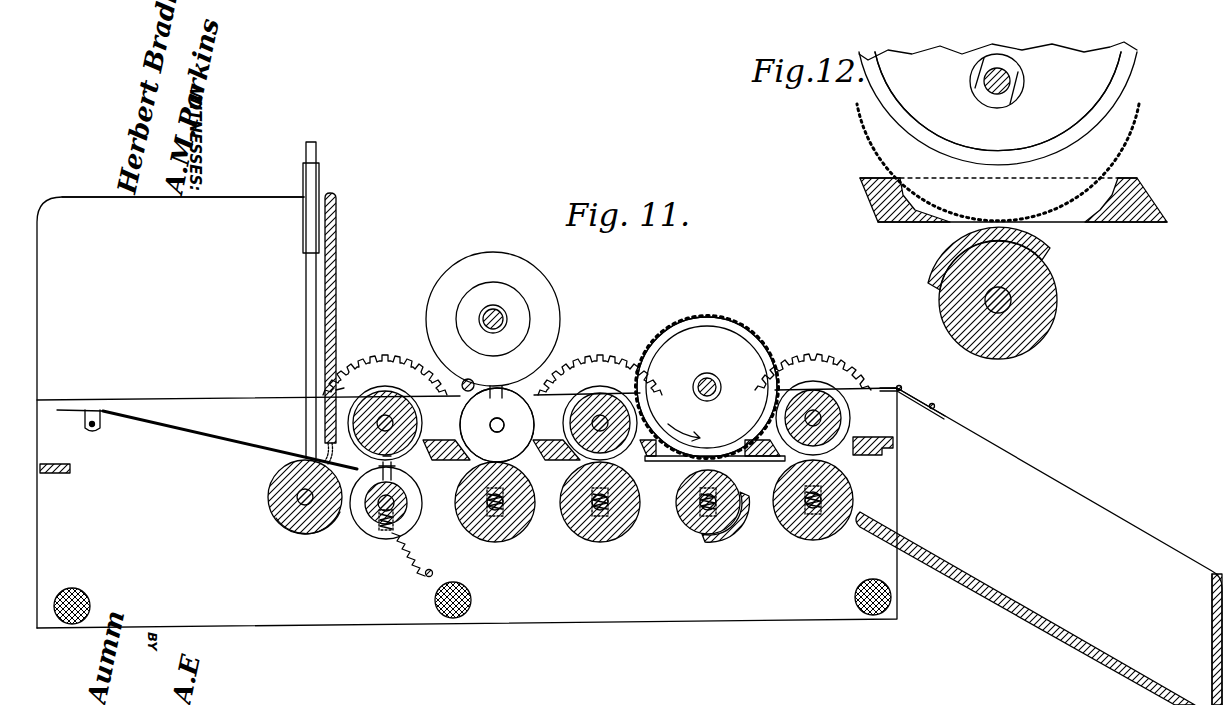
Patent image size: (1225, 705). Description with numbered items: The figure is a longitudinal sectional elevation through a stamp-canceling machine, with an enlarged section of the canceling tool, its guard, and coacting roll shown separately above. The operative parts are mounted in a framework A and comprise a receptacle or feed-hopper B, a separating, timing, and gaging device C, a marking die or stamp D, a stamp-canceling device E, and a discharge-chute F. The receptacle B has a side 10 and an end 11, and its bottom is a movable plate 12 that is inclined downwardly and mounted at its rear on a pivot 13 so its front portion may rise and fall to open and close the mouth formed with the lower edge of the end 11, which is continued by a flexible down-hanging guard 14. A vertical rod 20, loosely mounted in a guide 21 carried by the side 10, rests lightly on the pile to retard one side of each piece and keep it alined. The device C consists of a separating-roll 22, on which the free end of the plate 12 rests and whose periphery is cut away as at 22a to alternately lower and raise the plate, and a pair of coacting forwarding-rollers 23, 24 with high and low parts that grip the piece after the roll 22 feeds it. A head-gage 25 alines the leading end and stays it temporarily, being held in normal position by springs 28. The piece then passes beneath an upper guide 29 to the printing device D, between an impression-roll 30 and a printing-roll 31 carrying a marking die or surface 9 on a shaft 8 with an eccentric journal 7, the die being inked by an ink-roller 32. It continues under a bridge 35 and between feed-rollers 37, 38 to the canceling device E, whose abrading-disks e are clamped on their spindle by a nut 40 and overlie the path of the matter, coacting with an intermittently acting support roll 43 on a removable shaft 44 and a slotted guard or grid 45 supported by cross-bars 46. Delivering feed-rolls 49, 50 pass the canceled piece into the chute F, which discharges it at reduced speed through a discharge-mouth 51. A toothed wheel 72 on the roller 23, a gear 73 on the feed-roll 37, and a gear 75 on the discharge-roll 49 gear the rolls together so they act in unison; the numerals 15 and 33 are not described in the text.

In FIG. 11, the journal 7 is at (493, 418).
In FIG. 11, the shaft 8 is at (504, 425).
In FIG. 11, the marking die or surface 9 is at (510, 462).
In FIG. 11, the receptacle side 10 is at (222, 198).
In FIG. 11, the receptacle end 11 is at (337, 285).
In FIG. 11, the movable plate 12 is at (205, 432).
In FIG. 11, the pivot 13 is at (95, 430).
In FIG. 11, the flexible down-hanging guard 14 is at (324, 447).
In FIG. 11, the stop 15 is at (345, 390).
In FIG. 11, the vertical rod 20 is at (305, 284).
In FIG. 11, the guide 21 is at (303, 187).
In FIG. 11, the separating-roll 22 is at (285, 497).
In FIG. 11, the cut-away portions 22a is at (305, 530).
In FIG. 11, the forwarding-roller 23 is at (393, 408).
In FIG. 11, the forwarding-roller 24 is at (372, 528).
In FIG. 11, the head-gage 25 is at (396, 470).
In FIG. 11, the springs 28 is at (400, 570).
In FIG. 11, the upper guide 29 is at (444, 432).
In FIG. 11, the impression-roll 30 is at (520, 522).
In FIG. 11, the printing-roll 31 is at (497, 425).
In FIG. 11, the ink-roller 32 is at (510, 352).
In FIG. 11, the hub 33 is at (493, 305).
In FIG. 11, the bridge 35 is at (548, 440).
In FIG. 11, the feed-roller 37 is at (580, 402).
In FIG. 11, the feed-roller 38 is at (620, 536).
In FIG. 11, the nut 40 is at (707, 373).
In FIG. 12, the nut 40 is at (1024, 83).
In FIG. 11, the opposed bearer or support 43 is at (742, 530).
In FIG. 12, the opposed bearer or support 43 is at (940, 264).
In FIG. 11, the shaft 44 is at (690, 510).
In FIG. 12, the shaft 44 is at (996, 286).
In FIG. 11, the guard or grid 45 is at (742, 462).
In FIG. 12, the guard or grid 45 is at (1090, 222).
In FIG. 11, the cross-bars 46 is at (648, 462).
In FIG. 12, the cross-bars 46 is at (860, 186).
In FIG. 11, the delivering feed-roll 49 is at (835, 415).
In FIG. 11, the delivering feed-roll 50 is at (840, 482).
In FIG. 11, the discharge-mouth 51 is at (1200, 694).
In FIG. 11, the toothed wheel 72 is at (378, 357).
In FIG. 11, the gear 73 is at (612, 356).
In FIG. 11, the gear 75 is at (822, 355).
In FIG. 11, the framework A is at (467, 508).
In FIG. 11, the receptacle or feed-hopper B is at (170, 412).
In FIG. 11, the separating, timing, and gaging device C is at (377, 512).
In FIG. 11, the marking die or stamp D is at (501, 417).
In FIG. 11, the stamp-canceling device E is at (707, 373).
In FIG. 12, the stamp-canceling device E is at (976, 131).
In FIG. 11, the abrading-disks e is at (674, 326).
In FIG. 12, the abrading-disks e is at (1118, 128).
In FIG. 11, the discharge-chute F is at (1051, 546).